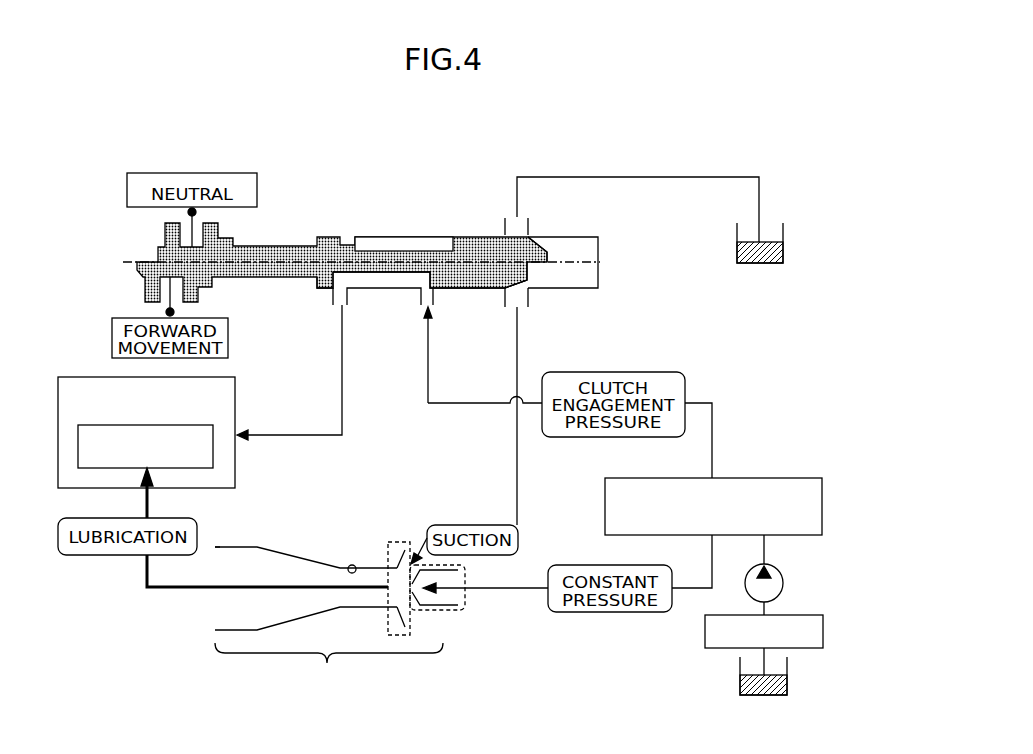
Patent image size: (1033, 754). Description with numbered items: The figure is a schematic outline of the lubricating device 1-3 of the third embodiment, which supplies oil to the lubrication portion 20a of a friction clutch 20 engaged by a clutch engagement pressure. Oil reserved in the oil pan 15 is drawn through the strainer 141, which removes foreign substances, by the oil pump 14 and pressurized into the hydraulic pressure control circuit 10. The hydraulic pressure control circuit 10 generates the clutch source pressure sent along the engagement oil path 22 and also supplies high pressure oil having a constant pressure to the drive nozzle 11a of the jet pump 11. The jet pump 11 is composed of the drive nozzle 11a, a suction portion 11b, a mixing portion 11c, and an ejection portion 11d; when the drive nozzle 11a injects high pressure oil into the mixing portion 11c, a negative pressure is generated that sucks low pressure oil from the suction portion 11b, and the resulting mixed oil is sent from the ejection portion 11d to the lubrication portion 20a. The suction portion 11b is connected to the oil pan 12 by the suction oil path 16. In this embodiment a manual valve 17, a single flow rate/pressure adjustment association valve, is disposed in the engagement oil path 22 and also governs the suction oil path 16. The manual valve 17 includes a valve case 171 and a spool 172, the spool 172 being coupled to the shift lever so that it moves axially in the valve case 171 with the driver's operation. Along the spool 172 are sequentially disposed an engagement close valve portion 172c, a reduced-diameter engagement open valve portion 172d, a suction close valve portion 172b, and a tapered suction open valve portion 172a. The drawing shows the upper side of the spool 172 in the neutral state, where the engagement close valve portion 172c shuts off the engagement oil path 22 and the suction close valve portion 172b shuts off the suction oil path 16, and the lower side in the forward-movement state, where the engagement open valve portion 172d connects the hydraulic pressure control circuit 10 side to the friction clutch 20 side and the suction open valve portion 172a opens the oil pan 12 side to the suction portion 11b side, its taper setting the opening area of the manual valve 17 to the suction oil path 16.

The lubricating device 1-3 is at (726, 152).
The suction oil path 16 is at (680, 177).
The oil pan 12 is at (765, 265).
The manual valve 17 is at (386, 219).
The valve case 171 is at (545, 250).
The spool 172 is at (550, 253).
The suction open valve portion 172a is at (521, 289).
The suction close valve portion 172b is at (483, 289).
The engagement close valve portion 172c is at (327, 287).
The engagement open valve portion 172d is at (387, 274).
The friction clutch 20 is at (235, 393).
The lubrication portion 20a is at (178, 425).
The engagement oil path 22 is at (277, 437).
The hydraulic pressure control circuit 10 is at (775, 478).
The oil pump 14 is at (779, 565).
The strainer 141 is at (782, 614).
The oil pan 15 is at (767, 697).
The jet pump 11 is at (329, 618).
The drive nozzle 11a is at (455, 612).
The suction portion 11b is at (398, 541).
The mixing portion 11c is at (348, 565).
The ejection portion 11d is at (214, 546).